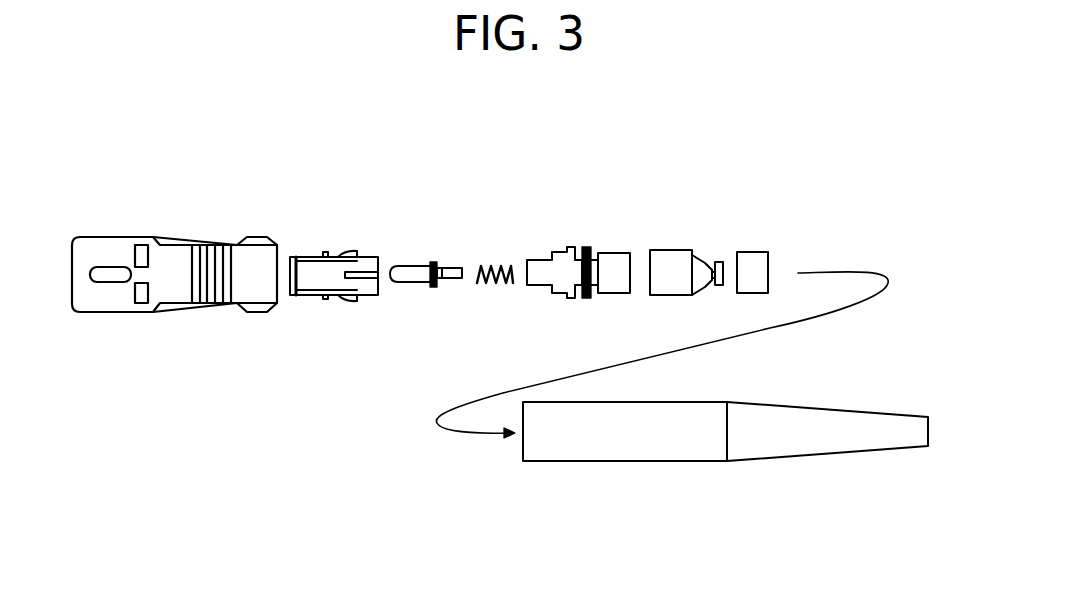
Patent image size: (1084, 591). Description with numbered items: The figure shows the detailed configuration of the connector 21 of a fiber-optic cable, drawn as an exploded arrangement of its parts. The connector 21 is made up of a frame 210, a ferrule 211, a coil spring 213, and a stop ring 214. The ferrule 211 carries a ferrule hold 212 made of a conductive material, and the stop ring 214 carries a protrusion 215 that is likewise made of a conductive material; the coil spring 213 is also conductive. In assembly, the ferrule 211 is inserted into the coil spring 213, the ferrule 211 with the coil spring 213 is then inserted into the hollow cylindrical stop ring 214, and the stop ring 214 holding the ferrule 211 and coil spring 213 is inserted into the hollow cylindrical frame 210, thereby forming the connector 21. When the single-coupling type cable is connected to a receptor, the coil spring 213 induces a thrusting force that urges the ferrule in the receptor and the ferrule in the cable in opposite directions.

The connector 21 is at (625, 130).
The frame 210 is at (326, 252).
The ferrule 211 is at (405, 266).
The ferrule hold 212 is at (435, 288).
The coil spring 213 is at (492, 264).
The stop ring 214 is at (570, 247).
The protrusion 215 is at (588, 298).